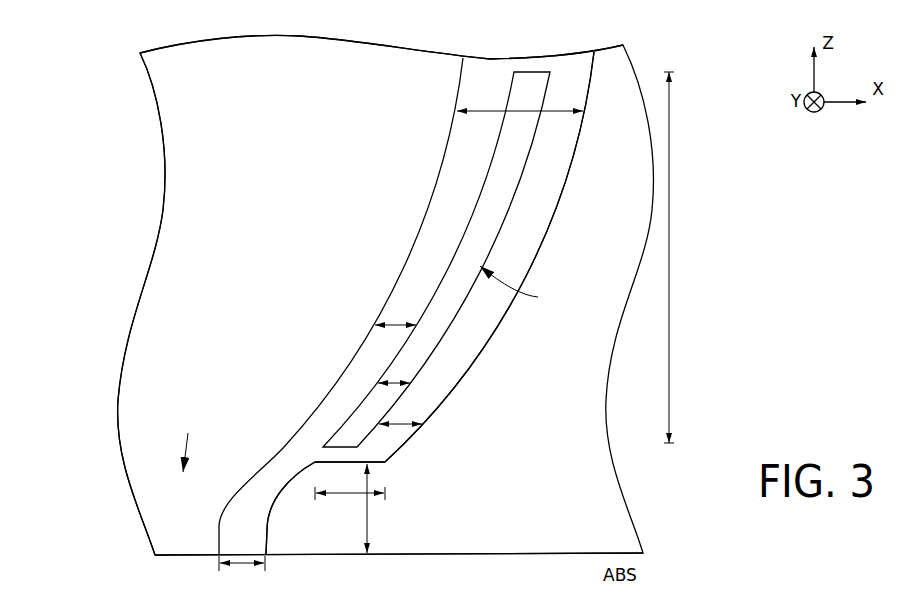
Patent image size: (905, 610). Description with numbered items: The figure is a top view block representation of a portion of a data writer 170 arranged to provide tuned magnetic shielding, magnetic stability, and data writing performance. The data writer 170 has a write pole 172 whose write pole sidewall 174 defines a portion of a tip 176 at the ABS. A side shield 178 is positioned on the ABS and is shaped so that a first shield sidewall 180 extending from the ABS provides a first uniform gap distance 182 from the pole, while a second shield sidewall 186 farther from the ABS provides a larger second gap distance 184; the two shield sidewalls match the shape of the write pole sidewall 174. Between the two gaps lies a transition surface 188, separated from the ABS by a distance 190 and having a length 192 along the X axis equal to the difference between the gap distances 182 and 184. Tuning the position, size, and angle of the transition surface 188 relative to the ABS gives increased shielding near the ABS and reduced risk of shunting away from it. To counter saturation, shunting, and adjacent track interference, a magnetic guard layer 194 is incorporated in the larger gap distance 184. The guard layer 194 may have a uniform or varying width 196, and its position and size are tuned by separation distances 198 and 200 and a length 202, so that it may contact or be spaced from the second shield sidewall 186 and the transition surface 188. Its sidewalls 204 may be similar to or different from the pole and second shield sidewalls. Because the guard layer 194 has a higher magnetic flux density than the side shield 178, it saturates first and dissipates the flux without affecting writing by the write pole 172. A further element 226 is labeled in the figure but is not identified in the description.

The data writer 170 is at (121, 44).
The write pole 172 is at (301, 77).
The write pole sidewall 174 is at (450, 135).
The tip 176 is at (195, 441).
The side shield 178 is at (583, 544).
The first shield sidewall 180 is at (268, 533).
The first uniform gap distance 182 is at (242, 576).
The second gap distance 184 is at (520, 99).
The second shield sidewall 186 is at (453, 389).
The transition surface 188 is at (385, 463).
The distance 190 is at (349, 508).
The length 192 is at (350, 486).
The magnetic guard layer 194 is at (525, 287).
The width 196 is at (397, 381).
The separation distance 198 is at (395, 314).
The separation distance 200 is at (397, 435).
The length 202 is at (684, 257).
The guard layer sidewalls 204 is at (531, 148).
The leading edge of write head 226 is at (196, 160).